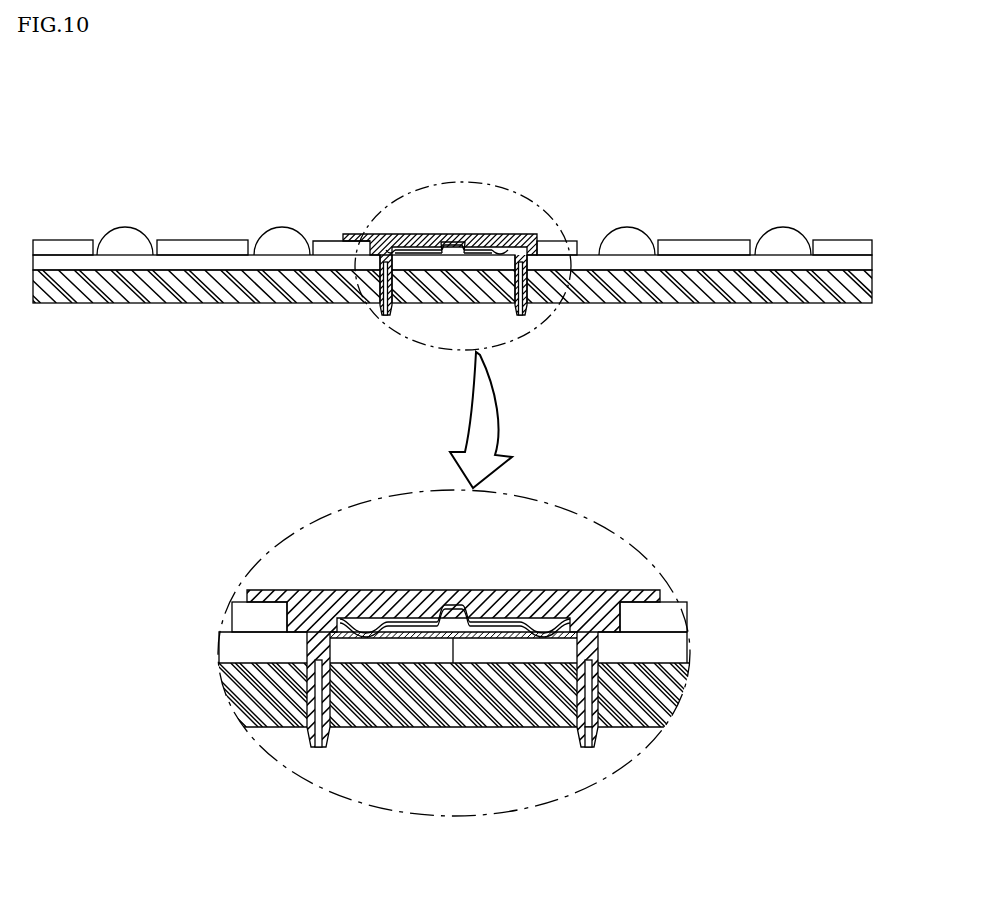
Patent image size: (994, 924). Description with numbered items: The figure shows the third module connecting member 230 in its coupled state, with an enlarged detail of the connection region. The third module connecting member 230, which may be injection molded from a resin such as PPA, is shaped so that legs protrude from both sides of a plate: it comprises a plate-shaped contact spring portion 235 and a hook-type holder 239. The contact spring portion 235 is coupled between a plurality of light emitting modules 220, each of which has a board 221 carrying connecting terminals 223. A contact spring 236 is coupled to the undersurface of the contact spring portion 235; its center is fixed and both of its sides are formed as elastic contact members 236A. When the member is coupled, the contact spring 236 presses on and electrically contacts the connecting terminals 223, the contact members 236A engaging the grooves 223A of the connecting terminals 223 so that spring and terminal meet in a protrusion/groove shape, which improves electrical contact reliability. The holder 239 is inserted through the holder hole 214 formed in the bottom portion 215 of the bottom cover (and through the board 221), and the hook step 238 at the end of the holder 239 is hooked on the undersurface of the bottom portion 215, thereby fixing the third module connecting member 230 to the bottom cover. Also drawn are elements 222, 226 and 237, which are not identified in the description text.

The holder hole 214 is at (582, 685).
The bottom portion 215 is at (772, 300).
The light emitting module 220 is at (858, 163).
The board 221 is at (849, 262).
The lens 222 is at (782, 228).
The connecting terminal 223 is at (400, 637).
The groove 223A is at (385, 640).
The electrode plate 226 is at (713, 245).
The third module connecting member 230 is at (485, 228).
The contact spring portion 235 is at (433, 233).
The contact spring 236 is at (452, 439).
The contact member 236A is at (358, 635).
The terminal tab 237 is at (448, 610).
The hook step 238 is at (600, 728).
The holder 239 is at (533, 292).